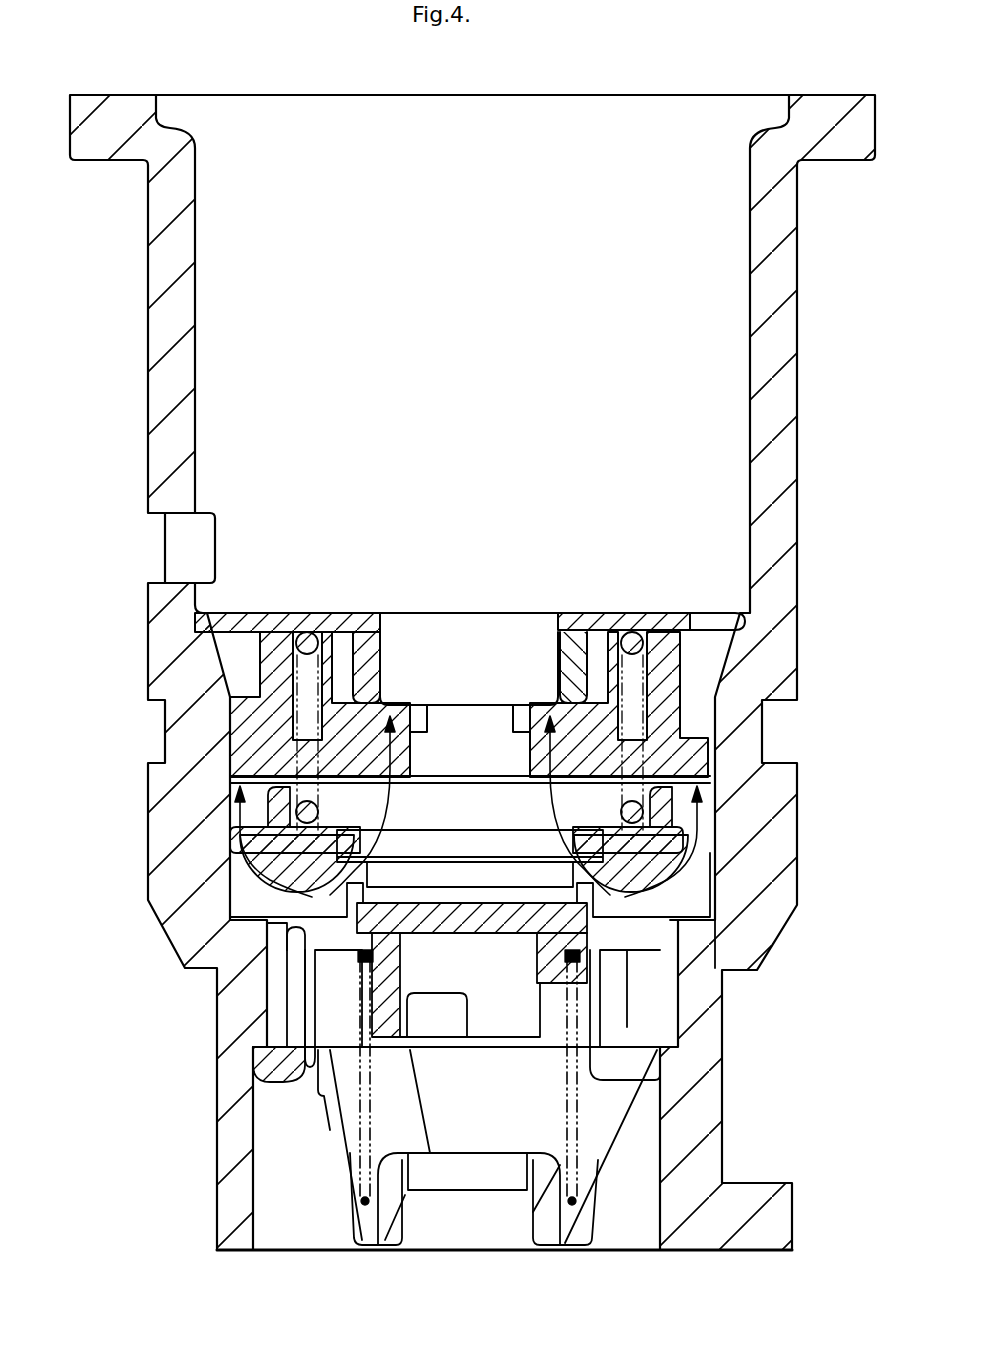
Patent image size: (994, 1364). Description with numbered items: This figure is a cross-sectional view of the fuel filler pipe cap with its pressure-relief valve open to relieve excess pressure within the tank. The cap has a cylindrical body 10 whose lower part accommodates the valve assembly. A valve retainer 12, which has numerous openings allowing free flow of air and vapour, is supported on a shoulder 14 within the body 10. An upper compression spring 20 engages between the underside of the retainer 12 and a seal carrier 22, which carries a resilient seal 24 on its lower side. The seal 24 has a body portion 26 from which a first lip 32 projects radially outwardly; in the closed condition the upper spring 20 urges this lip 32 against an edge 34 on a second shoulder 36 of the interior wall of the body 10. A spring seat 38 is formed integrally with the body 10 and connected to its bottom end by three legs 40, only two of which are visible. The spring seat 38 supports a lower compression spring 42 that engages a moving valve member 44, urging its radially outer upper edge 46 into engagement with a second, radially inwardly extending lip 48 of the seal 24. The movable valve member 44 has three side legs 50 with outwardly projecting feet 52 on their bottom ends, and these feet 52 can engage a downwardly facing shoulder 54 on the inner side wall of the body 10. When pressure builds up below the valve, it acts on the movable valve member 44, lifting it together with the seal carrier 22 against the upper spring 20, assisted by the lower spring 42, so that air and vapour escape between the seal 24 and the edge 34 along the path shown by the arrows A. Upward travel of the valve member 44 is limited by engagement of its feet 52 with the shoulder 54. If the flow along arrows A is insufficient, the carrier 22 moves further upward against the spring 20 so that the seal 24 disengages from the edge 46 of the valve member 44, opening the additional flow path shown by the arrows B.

The cylindrical body 10 is at (775, 292).
The valve retainer 12 is at (334, 623).
The shoulder 14 is at (770, 618).
The upper compression spring 20 is at (310, 713).
The seal carrier 22 is at (262, 868).
The resilient seal 24 is at (230, 903).
The body portion 26 is at (330, 830).
The first lip 32 is at (747, 870).
The edge 34 is at (747, 960).
The second shoulder 36 is at (715, 908).
The spring seat 38 is at (390, 1206).
The legs 40 is at (343, 1137).
The lower compression spring 42 is at (565, 1133).
The moving valve member 44 is at (378, 937).
The radially outer upper edge 46 is at (443, 895).
The second lip 48 is at (713, 876).
The side legs 50 is at (296, 1012).
The feet 52 is at (603, 1070).
The downwardly facing shoulder 54 is at (257, 1083).
The arrows A is at (236, 800).
The arrows B is at (386, 725).